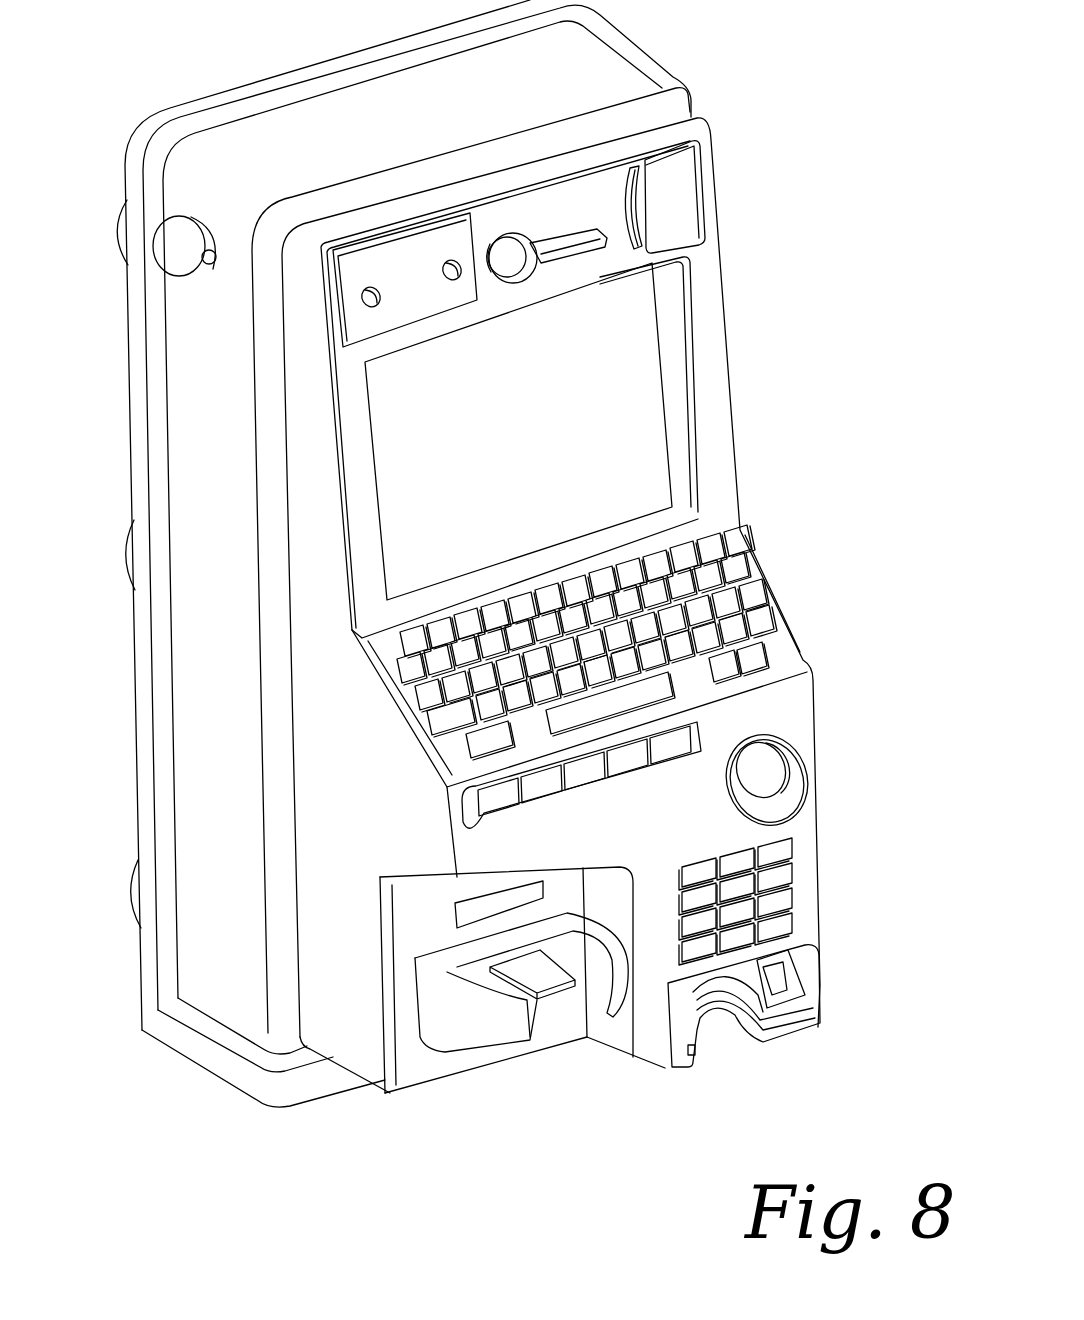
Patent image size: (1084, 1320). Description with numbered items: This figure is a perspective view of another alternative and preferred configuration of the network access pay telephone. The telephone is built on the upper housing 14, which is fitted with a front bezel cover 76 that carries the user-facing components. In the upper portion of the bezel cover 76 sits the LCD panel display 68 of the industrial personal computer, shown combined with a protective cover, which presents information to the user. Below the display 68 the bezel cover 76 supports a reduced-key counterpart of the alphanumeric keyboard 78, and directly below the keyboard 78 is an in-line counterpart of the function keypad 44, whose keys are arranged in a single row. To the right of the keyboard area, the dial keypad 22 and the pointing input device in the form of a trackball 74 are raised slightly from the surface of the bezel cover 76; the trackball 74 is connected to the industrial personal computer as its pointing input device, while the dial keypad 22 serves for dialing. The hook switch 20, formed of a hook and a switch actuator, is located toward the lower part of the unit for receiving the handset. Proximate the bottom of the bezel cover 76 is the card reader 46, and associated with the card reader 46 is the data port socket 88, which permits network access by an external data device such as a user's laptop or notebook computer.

The upper housing 14 is at (132, 664).
The bezel cover 76 is at (731, 355).
The LCD panel display 68 is at (573, 423).
The alphanumeric keyboard 78 is at (757, 600).
The function keypad 44 is at (484, 810).
The trackball 74 is at (772, 763).
The dial keypad 22 is at (780, 893).
The hook switch 20 is at (540, 995).
The data port socket 88 is at (772, 973).
The card reader 46 is at (697, 1043).